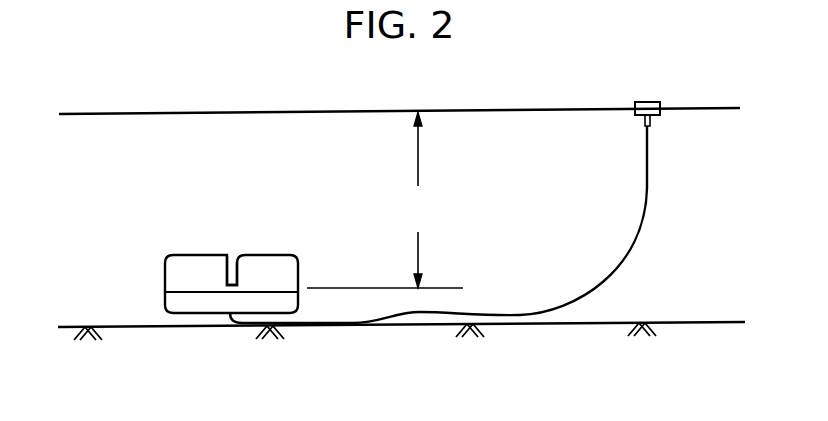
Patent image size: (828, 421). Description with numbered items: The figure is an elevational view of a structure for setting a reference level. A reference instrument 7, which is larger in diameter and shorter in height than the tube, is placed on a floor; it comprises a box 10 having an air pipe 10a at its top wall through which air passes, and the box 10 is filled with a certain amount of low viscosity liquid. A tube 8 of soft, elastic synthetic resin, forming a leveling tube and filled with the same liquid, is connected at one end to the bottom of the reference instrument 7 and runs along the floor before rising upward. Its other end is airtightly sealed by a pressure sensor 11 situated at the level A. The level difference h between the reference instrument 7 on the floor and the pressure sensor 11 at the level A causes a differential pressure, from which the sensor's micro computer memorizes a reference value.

The reference instrument 7 is at (228, 256).
The tube 8 is at (637, 237).
The box 10 is at (165, 273).
The air pipe 10a is at (227, 277).
The pressure sensor 11 is at (659, 114).
The level A is at (570, 109).
The level difference h is at (385, 200).